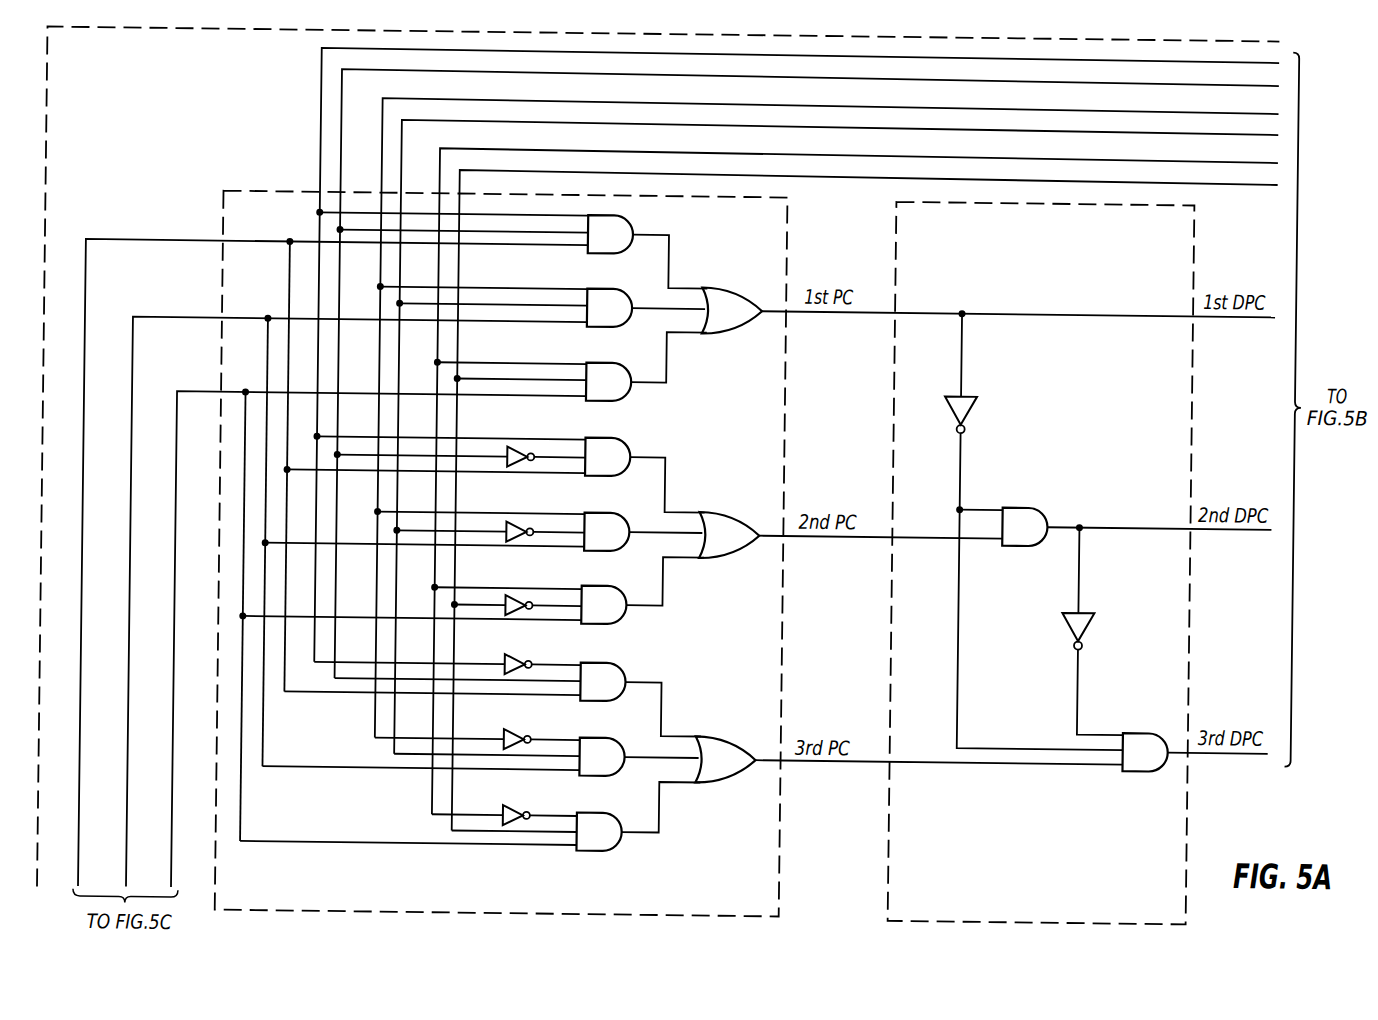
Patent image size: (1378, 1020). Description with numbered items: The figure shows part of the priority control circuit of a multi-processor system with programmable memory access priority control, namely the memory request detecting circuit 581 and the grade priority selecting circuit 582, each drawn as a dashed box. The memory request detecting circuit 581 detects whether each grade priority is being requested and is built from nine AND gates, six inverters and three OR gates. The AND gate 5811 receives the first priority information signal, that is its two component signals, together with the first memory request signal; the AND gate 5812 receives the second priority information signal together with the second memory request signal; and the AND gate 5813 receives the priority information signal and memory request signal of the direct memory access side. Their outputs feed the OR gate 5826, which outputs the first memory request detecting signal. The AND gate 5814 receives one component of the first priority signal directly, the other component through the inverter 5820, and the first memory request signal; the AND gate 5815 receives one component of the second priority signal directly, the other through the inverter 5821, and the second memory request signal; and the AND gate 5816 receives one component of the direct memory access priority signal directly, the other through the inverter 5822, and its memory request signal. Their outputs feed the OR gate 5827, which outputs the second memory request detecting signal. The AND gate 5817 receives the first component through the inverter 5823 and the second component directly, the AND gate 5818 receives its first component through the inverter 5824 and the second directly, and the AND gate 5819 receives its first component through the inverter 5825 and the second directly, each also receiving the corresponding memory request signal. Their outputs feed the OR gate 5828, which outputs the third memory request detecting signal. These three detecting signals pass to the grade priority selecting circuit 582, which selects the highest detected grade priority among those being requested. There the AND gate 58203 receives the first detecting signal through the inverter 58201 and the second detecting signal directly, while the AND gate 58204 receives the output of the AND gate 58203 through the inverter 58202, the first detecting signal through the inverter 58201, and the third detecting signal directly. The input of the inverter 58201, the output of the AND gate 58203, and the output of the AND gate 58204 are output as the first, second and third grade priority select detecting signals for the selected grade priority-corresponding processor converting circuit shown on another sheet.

The memory request detecting circuit 581 is at (456, 907).
The grade priority selecting circuit 582 is at (1123, 258).
The AND gate 5811 is at (603, 258).
The AND gate 5812 is at (603, 331).
The AND gate 5813 is at (603, 405).
The AND gate 5814 is at (603, 481).
The AND gate 5815 is at (603, 556).
The AND gate 5816 is at (603, 630).
The AND gate 5817 is at (603, 706).
The AND gate 5818 is at (603, 781).
The AND gate 5819 is at (603, 856).
The inverter 5820 is at (515, 448).
The inverter 5821 is at (515, 523).
The inverter 5822 is at (515, 597).
The inverter 5823 is at (515, 660).
The inverter 5824 is at (512, 733).
The inverter 5825 is at (512, 808).
The OR gate 5826 is at (726, 287).
The OR gate 5827 is at (727, 511).
The OR gate 5828 is at (724, 736).
The inverter 58201 is at (969, 396).
The inverter 58202 is at (1092, 613).
The AND gate 58203 is at (1026, 505).
The AND gate 58204 is at (1140, 728).